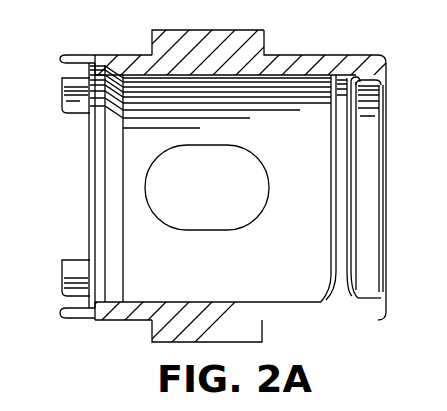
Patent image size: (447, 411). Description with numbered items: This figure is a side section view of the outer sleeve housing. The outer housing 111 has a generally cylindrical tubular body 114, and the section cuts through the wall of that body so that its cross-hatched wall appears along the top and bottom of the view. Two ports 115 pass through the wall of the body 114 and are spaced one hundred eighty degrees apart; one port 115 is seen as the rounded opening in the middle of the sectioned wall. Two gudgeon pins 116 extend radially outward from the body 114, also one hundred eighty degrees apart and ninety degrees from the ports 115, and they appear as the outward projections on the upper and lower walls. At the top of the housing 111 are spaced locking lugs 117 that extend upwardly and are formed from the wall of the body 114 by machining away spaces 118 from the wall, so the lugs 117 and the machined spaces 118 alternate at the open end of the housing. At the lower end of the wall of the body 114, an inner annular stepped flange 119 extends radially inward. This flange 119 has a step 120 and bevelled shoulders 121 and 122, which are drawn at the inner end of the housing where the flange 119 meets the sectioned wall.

The outer housing 111 is at (281, 36).
The tubular body 114 is at (316, 55).
The port 115 is at (221, 149).
The gudgeon pin 116 is at (170, 31).
The locking lug 117 is at (66, 54).
The space 118 is at (66, 73).
The inner annular stepped flange 119 is at (381, 268).
The step 120 is at (334, 293).
The bevelled shoulder 121 is at (351, 288).
The bevelled shoulder 122 is at (371, 293).